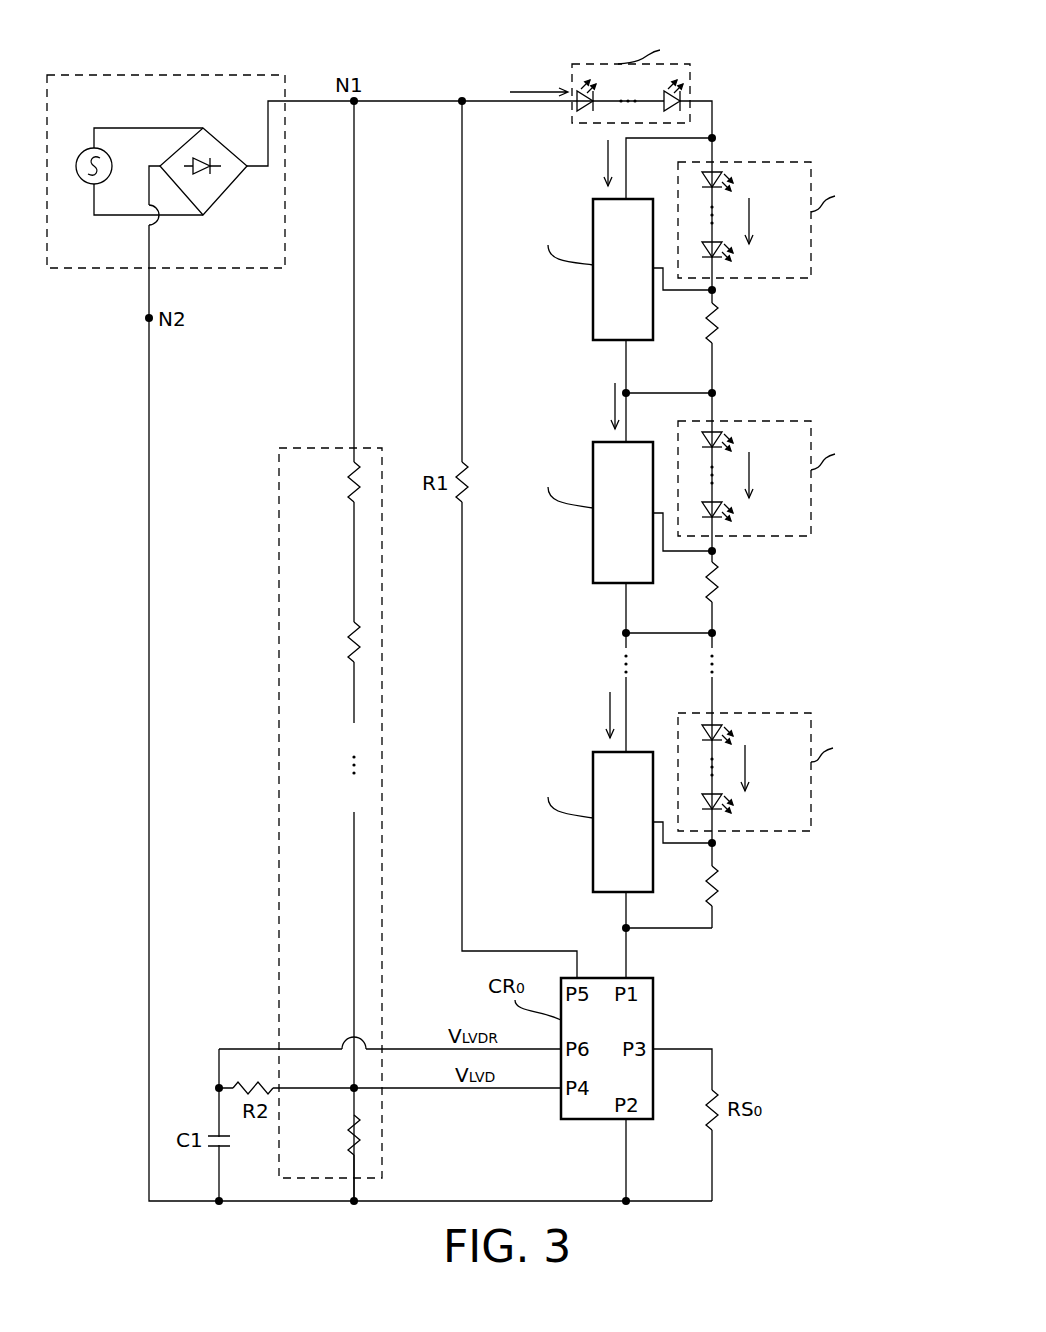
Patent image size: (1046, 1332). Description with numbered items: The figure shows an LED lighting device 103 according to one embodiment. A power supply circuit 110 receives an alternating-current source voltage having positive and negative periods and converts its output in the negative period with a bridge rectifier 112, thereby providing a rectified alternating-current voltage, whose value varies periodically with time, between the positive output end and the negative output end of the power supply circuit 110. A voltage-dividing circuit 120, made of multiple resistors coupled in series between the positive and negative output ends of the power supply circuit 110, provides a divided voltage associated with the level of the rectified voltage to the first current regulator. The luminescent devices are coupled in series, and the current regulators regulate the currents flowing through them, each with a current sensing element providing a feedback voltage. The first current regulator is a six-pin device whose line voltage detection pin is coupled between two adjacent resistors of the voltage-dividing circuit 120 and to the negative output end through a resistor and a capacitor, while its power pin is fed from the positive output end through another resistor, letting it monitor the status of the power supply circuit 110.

The power supply circuit 110 is at (150, 75).
The bridge rectifier 112 is at (217, 140).
The voltage-dividing circuit 120 is at (310, 447).
The LED lighting device 103 is at (766, 72).